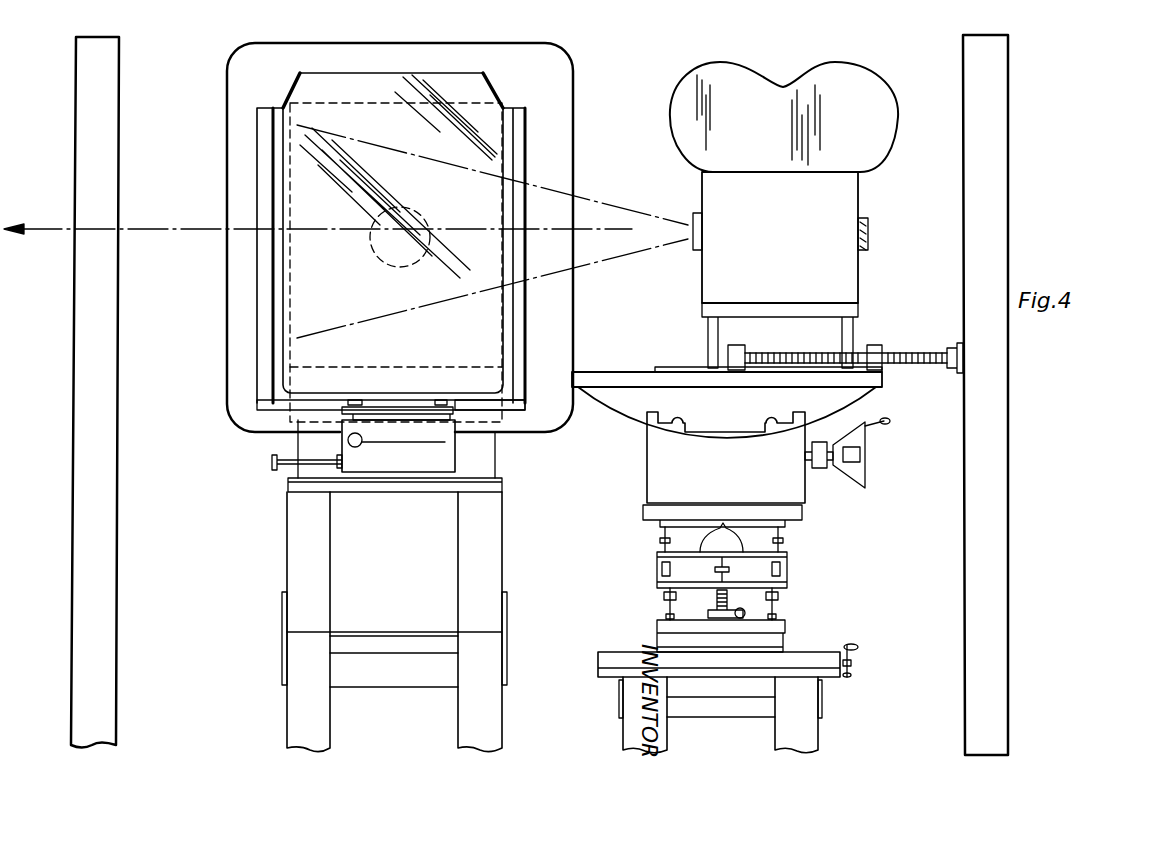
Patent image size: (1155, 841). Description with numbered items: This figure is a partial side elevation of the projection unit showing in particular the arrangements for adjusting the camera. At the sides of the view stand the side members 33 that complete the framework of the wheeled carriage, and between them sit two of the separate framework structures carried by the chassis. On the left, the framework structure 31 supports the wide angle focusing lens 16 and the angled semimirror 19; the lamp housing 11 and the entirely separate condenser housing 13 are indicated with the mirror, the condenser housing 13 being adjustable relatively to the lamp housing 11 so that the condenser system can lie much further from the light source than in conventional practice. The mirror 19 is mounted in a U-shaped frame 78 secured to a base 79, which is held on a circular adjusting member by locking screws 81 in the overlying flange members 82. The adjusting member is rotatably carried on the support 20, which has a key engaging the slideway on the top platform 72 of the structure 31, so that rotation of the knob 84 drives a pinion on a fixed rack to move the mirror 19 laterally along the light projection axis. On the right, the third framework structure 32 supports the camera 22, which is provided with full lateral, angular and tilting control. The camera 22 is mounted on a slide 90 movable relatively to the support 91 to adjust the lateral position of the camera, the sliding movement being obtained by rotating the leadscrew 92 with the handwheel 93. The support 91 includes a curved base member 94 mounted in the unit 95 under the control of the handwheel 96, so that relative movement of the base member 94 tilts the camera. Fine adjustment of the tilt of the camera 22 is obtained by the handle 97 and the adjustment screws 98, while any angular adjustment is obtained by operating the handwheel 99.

The lamp housing 11 is at (565, 68).
The condenser housing 13 is at (290, 282).
The wide angle focusing lens 16 is at (428, 214).
The angled semimirror 19 is at (325, 88).
The support 20 is at (445, 458).
The camera 22 is at (835, 213).
The framework structure 31 is at (300, 725).
The third framework structure 32 is at (640, 738).
The side members 33 is at (88, 100).
The top platform 72 is at (288, 480).
The U-shaped frame 78 is at (513, 152).
The base 79 is at (477, 405).
The locking screws 81 is at (355, 400).
The flange members 82 is at (410, 408).
The knob 84 is at (272, 462).
The slide 90 is at (668, 370).
The support 91 is at (585, 380).
The leadscrew 92 is at (908, 350).
The handwheel 93 is at (963, 360).
The curved base member 94 is at (613, 420).
The unit 95 is at (655, 478).
The handwheel 96 is at (868, 478).
The handle 97 is at (742, 612).
The adjustment screws 98 is at (660, 540).
The handwheel 99 is at (860, 655).